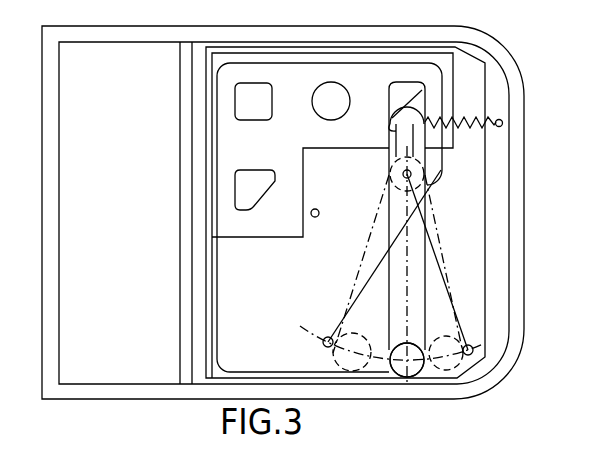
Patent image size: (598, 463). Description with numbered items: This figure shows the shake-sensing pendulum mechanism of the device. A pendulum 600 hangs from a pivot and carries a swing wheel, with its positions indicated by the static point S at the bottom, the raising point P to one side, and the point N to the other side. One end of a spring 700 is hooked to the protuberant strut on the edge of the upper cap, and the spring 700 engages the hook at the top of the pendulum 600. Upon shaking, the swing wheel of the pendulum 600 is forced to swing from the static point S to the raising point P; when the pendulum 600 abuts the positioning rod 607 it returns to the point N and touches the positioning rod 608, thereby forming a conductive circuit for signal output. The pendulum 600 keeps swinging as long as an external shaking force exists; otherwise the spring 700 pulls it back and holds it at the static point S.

The pendulum 600 is at (427, 263).
The spring 700 is at (478, 121).
The positioning rod 607 is at (324, 339).
The positioning rod 608 is at (473, 348).
The raising point P is at (347, 303).
The point N is at (453, 312).
The static point S is at (425, 343).